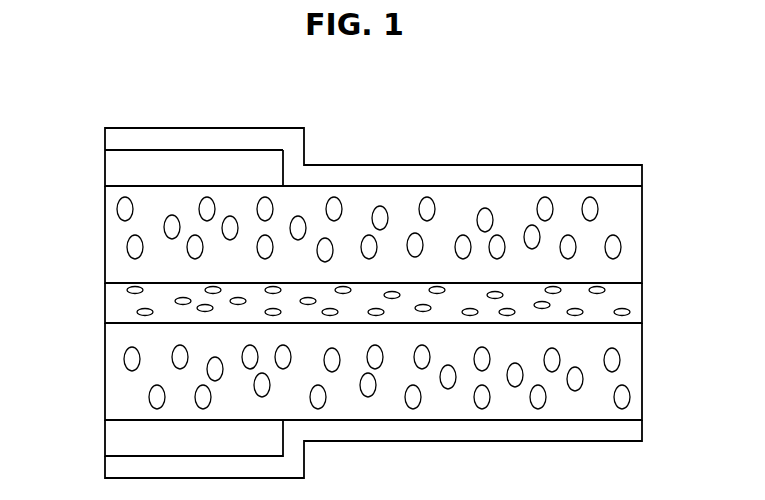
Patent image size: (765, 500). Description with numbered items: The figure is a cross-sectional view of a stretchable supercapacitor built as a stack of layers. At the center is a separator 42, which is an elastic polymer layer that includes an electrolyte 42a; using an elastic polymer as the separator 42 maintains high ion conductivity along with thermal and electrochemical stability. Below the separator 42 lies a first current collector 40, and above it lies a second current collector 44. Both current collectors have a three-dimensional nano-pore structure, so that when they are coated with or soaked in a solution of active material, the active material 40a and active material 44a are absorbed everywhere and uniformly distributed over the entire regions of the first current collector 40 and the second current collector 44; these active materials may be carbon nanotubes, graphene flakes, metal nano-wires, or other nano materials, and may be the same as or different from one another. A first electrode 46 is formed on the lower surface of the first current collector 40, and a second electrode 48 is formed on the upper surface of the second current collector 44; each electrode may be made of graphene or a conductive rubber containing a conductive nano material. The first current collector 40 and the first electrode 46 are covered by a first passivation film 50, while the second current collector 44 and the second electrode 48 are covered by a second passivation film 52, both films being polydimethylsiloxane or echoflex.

The first current collector 40 is at (112, 388).
The active material 40a is at (630, 398).
The separator 42 is at (112, 306).
The electrolyte 42a is at (630, 311).
The second current collector 44 is at (112, 248).
The active material 44a is at (621, 247).
The first electrode 46 is at (112, 436).
The second electrode 48 is at (112, 172).
The first passivation film 50 is at (112, 468).
The second passivation film 52 is at (112, 135).